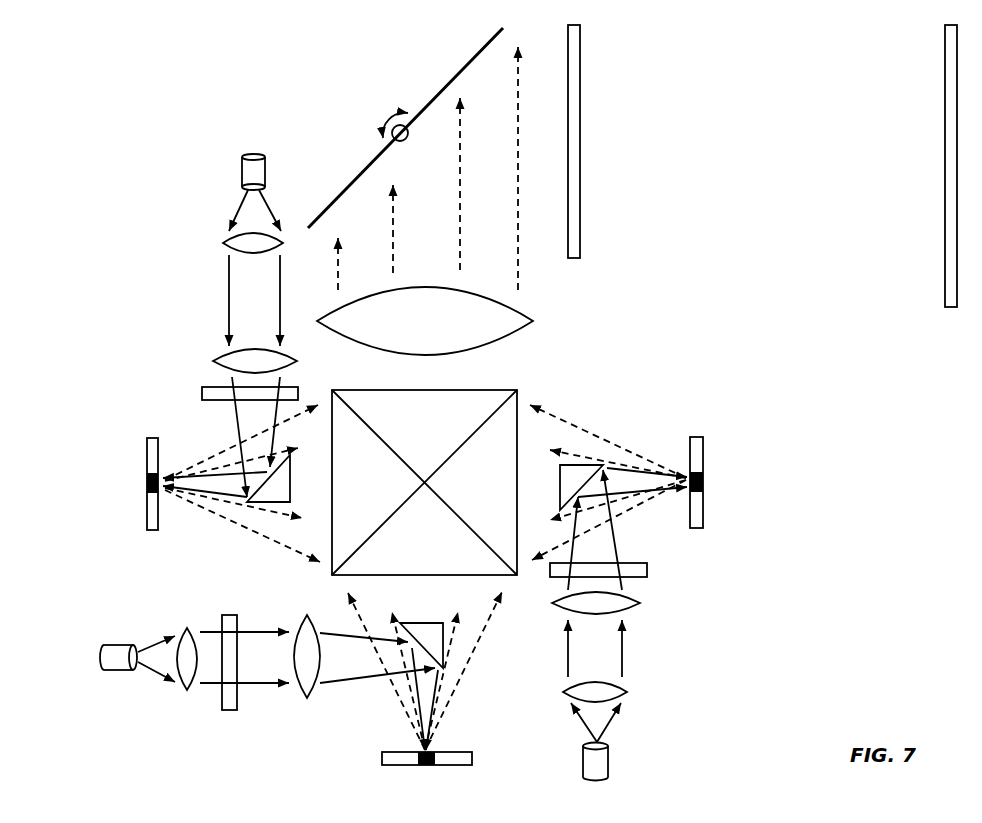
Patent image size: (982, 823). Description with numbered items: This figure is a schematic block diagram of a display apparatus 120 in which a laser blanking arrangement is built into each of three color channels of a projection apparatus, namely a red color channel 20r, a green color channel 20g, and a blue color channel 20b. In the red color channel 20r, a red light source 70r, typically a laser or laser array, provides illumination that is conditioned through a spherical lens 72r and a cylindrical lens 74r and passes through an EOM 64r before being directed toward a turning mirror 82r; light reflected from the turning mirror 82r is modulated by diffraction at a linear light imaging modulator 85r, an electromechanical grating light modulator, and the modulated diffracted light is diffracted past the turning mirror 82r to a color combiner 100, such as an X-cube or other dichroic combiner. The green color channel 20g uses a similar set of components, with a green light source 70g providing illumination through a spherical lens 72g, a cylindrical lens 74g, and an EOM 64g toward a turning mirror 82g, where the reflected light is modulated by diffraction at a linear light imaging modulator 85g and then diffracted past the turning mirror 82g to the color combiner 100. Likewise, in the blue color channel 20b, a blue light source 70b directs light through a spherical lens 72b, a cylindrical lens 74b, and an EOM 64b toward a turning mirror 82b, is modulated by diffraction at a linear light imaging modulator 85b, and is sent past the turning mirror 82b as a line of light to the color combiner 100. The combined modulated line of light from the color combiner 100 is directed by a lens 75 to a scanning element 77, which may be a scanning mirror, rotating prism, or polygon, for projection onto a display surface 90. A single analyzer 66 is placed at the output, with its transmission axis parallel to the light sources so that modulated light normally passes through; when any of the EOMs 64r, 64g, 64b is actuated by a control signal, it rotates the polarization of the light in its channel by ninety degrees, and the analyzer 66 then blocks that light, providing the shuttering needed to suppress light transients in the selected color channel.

The display apparatus 120 is at (178, 111).
The blue color channel 20b is at (279, 162).
The blue light source 70b is at (240, 169).
The spherical lens 72b is at (222, 244).
The cylindrical lens 74b is at (299, 358).
The EOM 64b is at (201, 393).
The turning mirror 82b is at (292, 496).
The linear light imaging modulator 85b is at (146, 464).
The green color channel 20g is at (125, 566).
The green light source 70g is at (100, 659).
The spherical lens 72g is at (182, 630).
The cylindrical lens 74g is at (301, 614).
The EOM 64g is at (222, 697).
The turning mirror 82g is at (422, 623).
The linear light imaging modulator 85g is at (389, 752).
The red color channel 20r is at (722, 602).
The red light source 70r is at (610, 775).
The spherical lens 72r is at (628, 693).
The cylindrical lens 74r is at (640, 605).
The EOM 64r is at (648, 571).
The turning mirror 82r is at (558, 498).
The linear light imaging modulator 85r is at (704, 478).
The color combiner 100 is at (489, 386).
The lens 75 is at (516, 310).
The scanning element 77 is at (450, 80).
The analyzer 66 is at (581, 156).
The display surface 90 is at (944, 168).